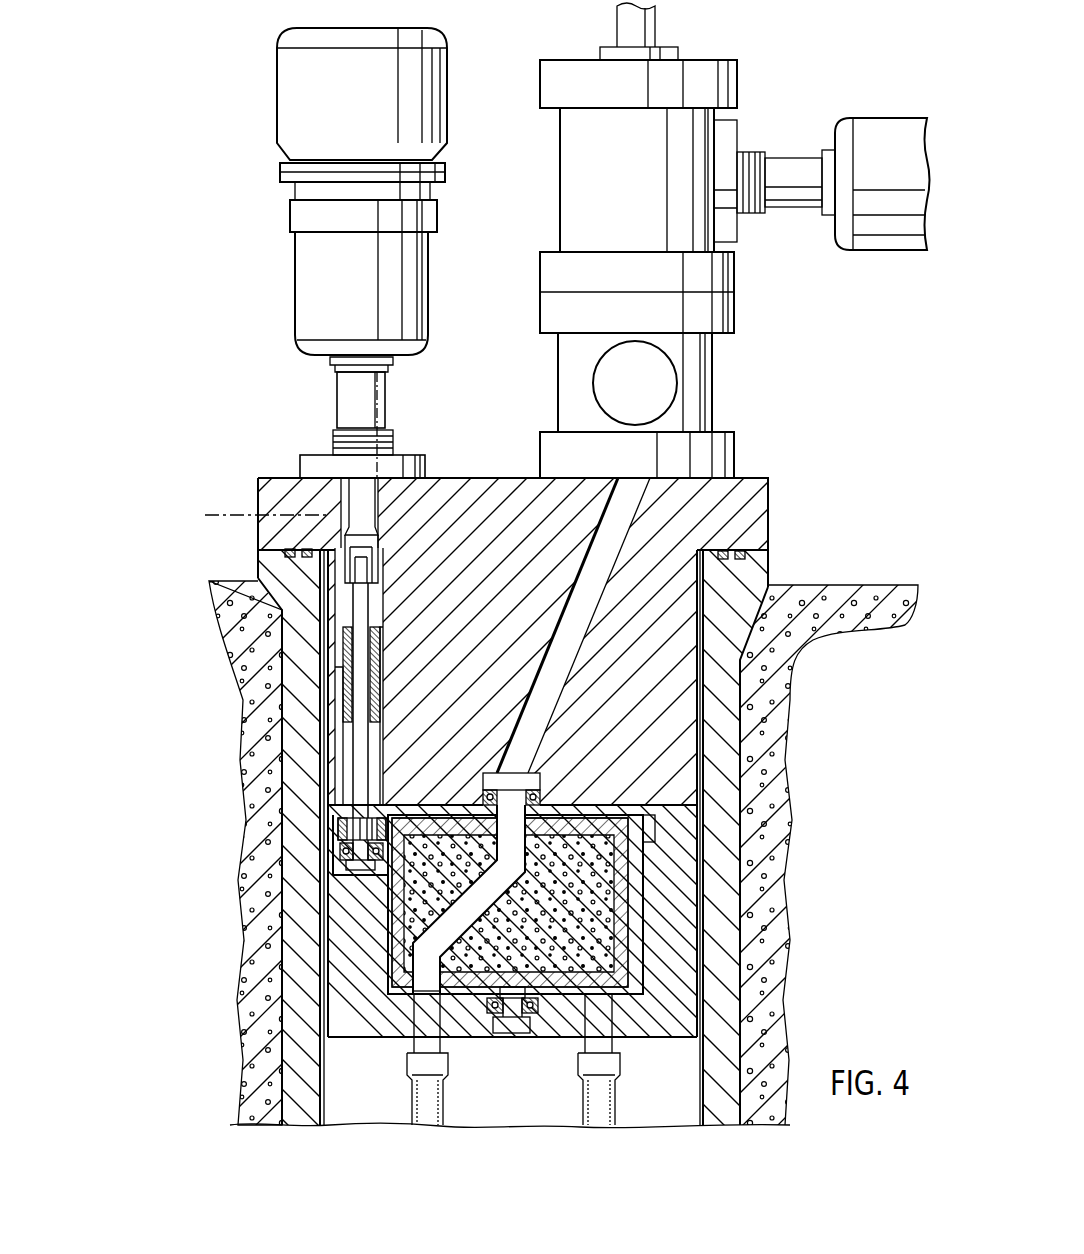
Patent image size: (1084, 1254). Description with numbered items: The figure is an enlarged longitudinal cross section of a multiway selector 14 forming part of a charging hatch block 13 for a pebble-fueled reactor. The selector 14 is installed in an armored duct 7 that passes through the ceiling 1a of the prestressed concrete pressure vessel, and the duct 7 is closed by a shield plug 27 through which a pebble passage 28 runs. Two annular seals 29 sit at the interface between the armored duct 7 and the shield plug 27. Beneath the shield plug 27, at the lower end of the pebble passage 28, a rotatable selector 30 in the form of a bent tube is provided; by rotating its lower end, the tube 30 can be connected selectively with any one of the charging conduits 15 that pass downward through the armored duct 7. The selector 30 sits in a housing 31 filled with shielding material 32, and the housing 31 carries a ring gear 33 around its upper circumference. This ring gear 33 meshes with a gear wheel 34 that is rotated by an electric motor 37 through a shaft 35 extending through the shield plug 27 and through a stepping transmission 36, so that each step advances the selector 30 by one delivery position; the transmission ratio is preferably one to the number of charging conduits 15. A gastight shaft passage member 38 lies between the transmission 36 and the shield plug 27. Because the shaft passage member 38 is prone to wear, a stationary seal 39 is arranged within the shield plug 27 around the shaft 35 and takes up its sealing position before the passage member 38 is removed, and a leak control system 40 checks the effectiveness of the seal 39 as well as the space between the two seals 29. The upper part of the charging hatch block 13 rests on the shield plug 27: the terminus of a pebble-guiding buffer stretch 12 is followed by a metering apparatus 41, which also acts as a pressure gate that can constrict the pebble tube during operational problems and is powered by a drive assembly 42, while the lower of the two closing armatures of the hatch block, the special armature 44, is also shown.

The ceiling or top of the prestressed concrete pressure vessel 1a is at (880, 603).
The armored duct 7 is at (735, 733).
The pebble-guiding buffer stretch 12 is at (607, 30).
The charging hatch block 13 is at (820, 47).
The selector 14 is at (842, 516).
The charging conduits 15 is at (425, 1088).
The shield plug 27 is at (740, 492).
The pebble passage 28 is at (585, 580).
The annular seals 29 is at (725, 558).
The rotatable gate or selector 30 is at (413, 935).
The housing 31 is at (632, 872).
The shielding material 32 is at (605, 916).
The ring gear 33 is at (657, 818).
The gear wheel 34 is at (355, 826).
The shaft 35 is at (360, 762).
The stepping transmission 36 is at (410, 291).
The electric motor 37 is at (415, 110).
The gastight shaft passage member 38 is at (347, 406).
The stationary seal 39 is at (345, 690).
The leak control system 40 is at (212, 515).
The metering apparatus 41 is at (700, 72).
The drive assembly 42 is at (893, 135).
The closing armature 44 is at (703, 367).